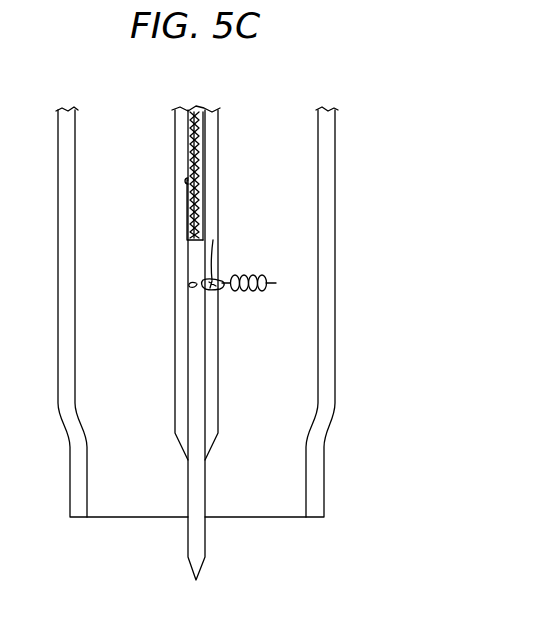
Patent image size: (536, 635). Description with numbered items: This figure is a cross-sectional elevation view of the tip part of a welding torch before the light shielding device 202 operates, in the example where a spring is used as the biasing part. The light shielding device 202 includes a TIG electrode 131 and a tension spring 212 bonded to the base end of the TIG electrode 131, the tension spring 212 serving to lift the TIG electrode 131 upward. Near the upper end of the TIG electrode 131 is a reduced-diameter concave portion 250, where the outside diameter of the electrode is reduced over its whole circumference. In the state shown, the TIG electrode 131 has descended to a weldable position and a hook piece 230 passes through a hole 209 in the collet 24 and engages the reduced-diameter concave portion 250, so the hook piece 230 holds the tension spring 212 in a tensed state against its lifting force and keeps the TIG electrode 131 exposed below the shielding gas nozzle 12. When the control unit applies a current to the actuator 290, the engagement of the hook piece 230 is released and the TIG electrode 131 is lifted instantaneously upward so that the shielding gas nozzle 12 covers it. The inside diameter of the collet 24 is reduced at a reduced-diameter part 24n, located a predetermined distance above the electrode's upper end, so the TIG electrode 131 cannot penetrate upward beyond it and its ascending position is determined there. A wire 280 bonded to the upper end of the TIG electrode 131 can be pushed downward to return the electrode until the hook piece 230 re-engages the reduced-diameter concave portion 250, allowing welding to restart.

The shielding gas nozzle 12 is at (336, 368).
The collet 24 is at (175, 432).
The reduced-diameter part 24n is at (187, 188).
The TIG electrode 131 is at (206, 540).
The light shielding device 202 is at (268, 106).
The hole 209 is at (212, 290).
The tension spring 212 is at (205, 129).
The hook piece 230 is at (220, 282).
The reduced-diameter concave portion 250 is at (213, 240).
The wire 280 is at (195, 207).
The actuator 290 is at (247, 279).